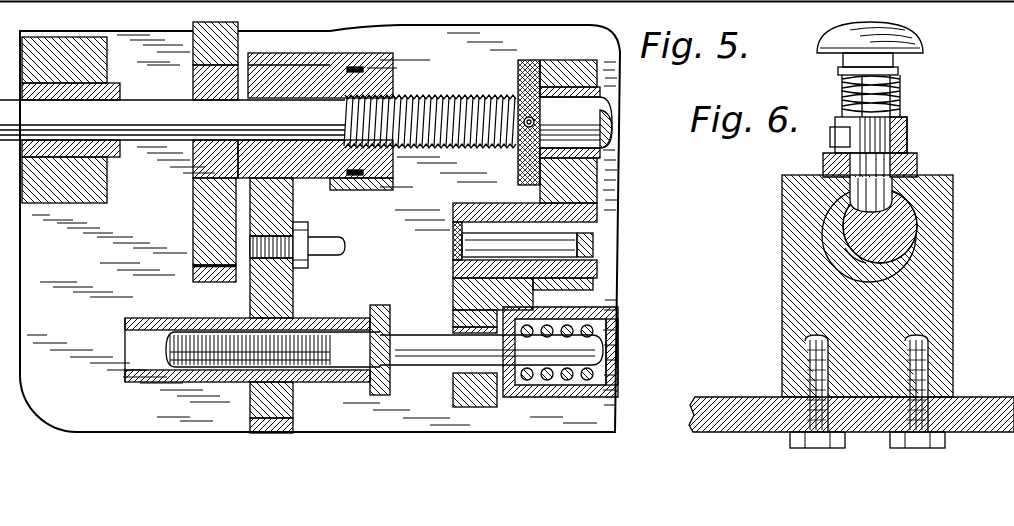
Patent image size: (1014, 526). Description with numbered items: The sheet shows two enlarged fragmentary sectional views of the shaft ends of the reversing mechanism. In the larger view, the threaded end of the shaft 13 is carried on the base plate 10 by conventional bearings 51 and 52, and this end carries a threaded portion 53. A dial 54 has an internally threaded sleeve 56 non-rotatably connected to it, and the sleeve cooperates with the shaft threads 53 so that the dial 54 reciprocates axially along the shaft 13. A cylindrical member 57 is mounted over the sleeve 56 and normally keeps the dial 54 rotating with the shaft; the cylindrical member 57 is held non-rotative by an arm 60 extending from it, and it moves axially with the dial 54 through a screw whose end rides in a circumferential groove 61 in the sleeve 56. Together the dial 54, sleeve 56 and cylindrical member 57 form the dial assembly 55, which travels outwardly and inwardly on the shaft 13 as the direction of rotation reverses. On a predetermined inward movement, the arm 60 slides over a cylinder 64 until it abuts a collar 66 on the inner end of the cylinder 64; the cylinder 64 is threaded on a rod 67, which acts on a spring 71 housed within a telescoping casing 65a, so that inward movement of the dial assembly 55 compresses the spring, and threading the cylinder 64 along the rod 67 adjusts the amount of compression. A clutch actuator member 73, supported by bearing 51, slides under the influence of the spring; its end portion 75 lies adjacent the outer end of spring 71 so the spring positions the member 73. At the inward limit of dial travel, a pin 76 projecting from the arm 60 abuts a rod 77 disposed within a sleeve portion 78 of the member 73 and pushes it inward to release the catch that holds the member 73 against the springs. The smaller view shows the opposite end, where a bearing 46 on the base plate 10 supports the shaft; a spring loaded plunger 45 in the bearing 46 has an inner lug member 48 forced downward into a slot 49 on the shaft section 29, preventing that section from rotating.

In FIG. 5, the base plate 10 is at (608, 193).
In FIG. 6, the base plate 10 is at (980, 397).
In FIG. 6, the shaft 13 is at (894, 234).
In FIG. 6, the shaft section 29 is at (847, 243).
In FIG. 6, the spring loaded plunger 45 is at (905, 33).
In FIG. 6, the bearing 46 is at (953, 288).
In FIG. 6, the inner lug member 48 is at (822, 222).
In FIG. 6, the slot 49 is at (895, 226).
In FIG. 5, the bearing 51 is at (561, 58).
In FIG. 5, the bearing 52 is at (42, 45).
In FIG. 5, the threaded portion 53 is at (466, 94).
In FIG. 5, the dial 54 is at (195, 200).
In FIG. 5, the dial assembly 55 is at (242, 43).
In FIG. 5, the internally threaded sleeve 56 is at (193, 84).
In FIG. 5, the cylindrical member 57 is at (388, 60).
In FIG. 5, the arm 60 is at (291, 294).
In FIG. 5, the circumferential groove 61 is at (356, 63).
In FIG. 5, the cylinder 64 is at (147, 318).
In FIG. 5, the casing 65a is at (614, 310).
In FIG. 5, the collar 66 is at (381, 306).
In FIG. 5, the rod 67 is at (424, 368).
In FIG. 5, the spring 71 is at (618, 333).
In FIG. 5, the clutch actuator member 73 is at (605, 101).
In FIG. 5, the end portion 75 is at (452, 280).
In FIG. 5, the pin 76 is at (328, 242).
In FIG. 5, the rod 77 is at (575, 238).
In FIG. 5, the sleeve portion 78 is at (592, 270).